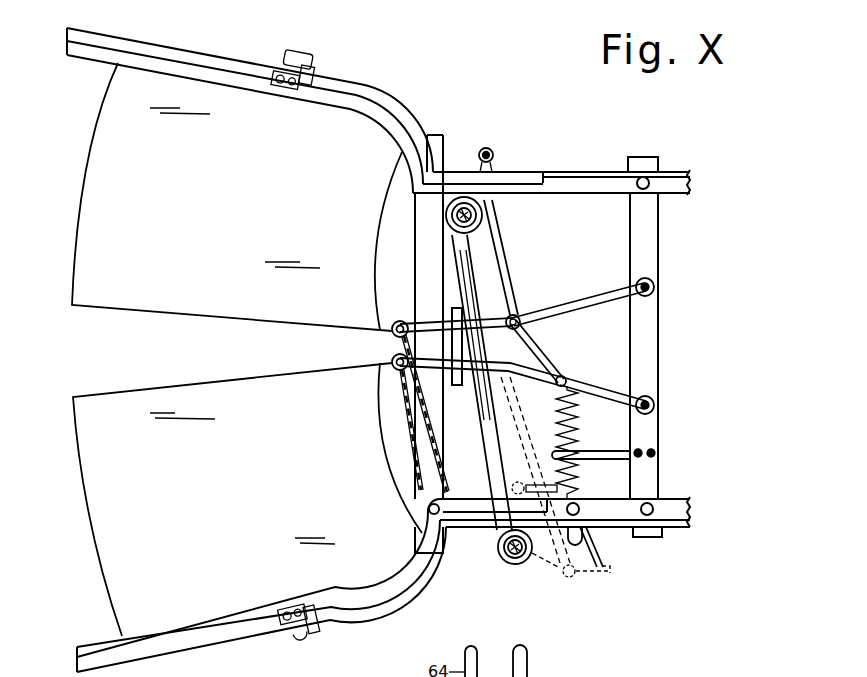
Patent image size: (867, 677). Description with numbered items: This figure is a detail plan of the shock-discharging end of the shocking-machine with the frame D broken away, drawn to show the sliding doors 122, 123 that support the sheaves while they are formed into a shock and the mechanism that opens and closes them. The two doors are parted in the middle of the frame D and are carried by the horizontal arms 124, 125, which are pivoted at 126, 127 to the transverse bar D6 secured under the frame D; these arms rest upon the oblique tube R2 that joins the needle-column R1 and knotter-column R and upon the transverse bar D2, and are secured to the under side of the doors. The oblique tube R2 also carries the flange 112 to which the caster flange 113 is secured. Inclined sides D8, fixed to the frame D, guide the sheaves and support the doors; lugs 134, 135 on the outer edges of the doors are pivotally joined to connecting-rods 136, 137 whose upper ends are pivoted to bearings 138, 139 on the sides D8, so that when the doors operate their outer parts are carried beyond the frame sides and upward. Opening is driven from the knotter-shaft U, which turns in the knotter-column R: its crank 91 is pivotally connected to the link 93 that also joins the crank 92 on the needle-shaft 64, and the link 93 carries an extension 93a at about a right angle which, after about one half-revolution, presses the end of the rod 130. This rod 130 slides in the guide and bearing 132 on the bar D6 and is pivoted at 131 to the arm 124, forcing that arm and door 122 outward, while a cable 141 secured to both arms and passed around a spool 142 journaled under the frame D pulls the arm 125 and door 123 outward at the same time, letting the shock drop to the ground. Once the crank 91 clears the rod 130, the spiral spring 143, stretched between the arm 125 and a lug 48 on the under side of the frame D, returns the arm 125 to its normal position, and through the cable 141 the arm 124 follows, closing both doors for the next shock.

The frame D is at (701, 512).
The sides D8 is at (237, 630).
The transverse bar D2 is at (421, 248).
The transverse bar D6 is at (652, 348).
The sliding door 122 is at (107, 132).
The sliding door 123 is at (112, 577).
The lug 134 is at (310, 43).
The connecting-rod 136 is at (315, 68).
The bearing 138 is at (294, 86).
The bearing 139 is at (300, 607).
The lug 135 is at (306, 634).
The connecting-rod 137 is at (320, 623).
The crank 92 is at (488, 148).
The needle-column R1 is at (483, 214).
The needle-shaft 64 is at (470, 219).
The connecting-rod 93 is at (498, 253).
The oblique tube R2 is at (487, 283).
The flange 113 is at (478, 306).
The flange 112 is at (481, 386).
The cable 141 is at (410, 437).
The spool 142 is at (433, 488).
The pivot 131 is at (520, 315).
The horizontal arm 124 is at (600, 298).
The rod 130 is at (527, 353).
The horizontal arm 125 is at (595, 394).
The pivot 126 is at (655, 287).
The pivot 127 is at (655, 405).
The spiral spring 143 is at (581, 421).
The guide and bearing 132 is at (604, 458).
The crank-arm 91 is at (512, 488).
The knotter-column R is at (498, 546).
The knotter-shaft U is at (505, 554).
The lug 48 is at (582, 532).
The extension 93a is at (594, 572).